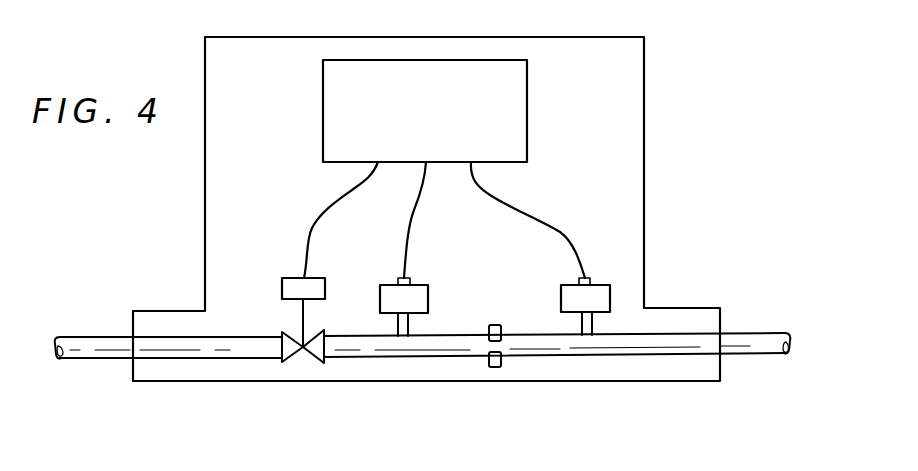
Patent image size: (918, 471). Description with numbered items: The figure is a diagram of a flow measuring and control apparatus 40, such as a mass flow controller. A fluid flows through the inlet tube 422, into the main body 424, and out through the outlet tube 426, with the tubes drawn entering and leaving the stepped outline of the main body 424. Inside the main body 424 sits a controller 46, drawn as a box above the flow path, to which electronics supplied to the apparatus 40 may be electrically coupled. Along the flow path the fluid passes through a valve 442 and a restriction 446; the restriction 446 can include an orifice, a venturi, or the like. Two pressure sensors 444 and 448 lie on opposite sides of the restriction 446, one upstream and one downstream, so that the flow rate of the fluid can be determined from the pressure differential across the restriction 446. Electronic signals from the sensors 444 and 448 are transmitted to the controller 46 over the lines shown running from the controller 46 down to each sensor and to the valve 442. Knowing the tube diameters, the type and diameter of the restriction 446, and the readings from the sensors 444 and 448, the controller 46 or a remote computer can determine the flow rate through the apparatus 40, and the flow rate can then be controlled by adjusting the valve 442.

The flow measuring and control apparatus 40 is at (687, 78).
The controller 46 is at (412, 122).
The inlet tube 422 is at (92, 337).
The main body 424 is at (645, 149).
The outlet tube 426 is at (748, 333).
The valve 442 is at (303, 317).
The pressure sensor 444 is at (393, 284).
The restriction 446 is at (488, 325).
The pressure sensor 448 is at (595, 284).